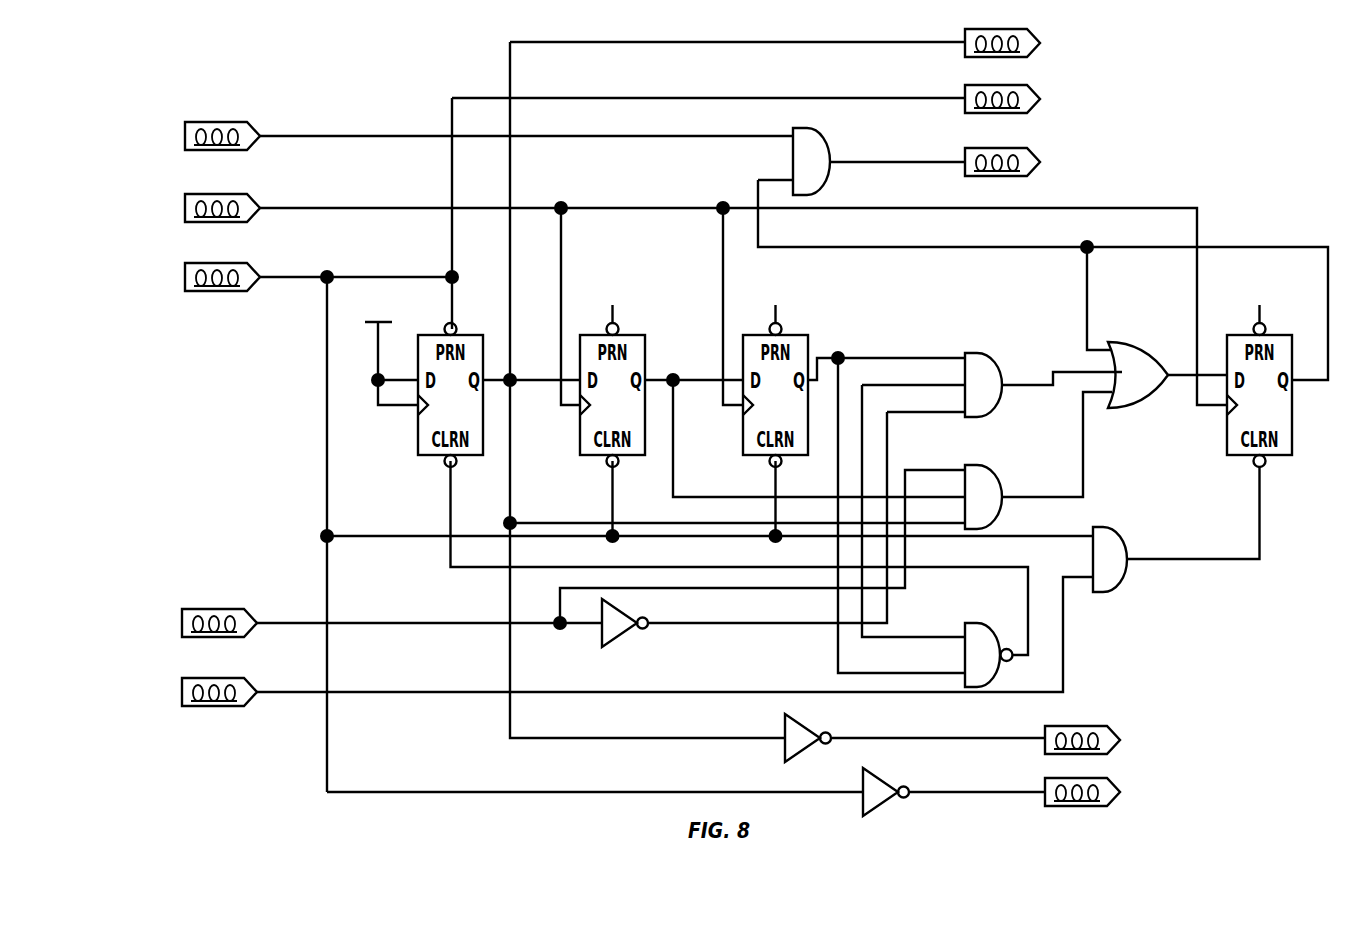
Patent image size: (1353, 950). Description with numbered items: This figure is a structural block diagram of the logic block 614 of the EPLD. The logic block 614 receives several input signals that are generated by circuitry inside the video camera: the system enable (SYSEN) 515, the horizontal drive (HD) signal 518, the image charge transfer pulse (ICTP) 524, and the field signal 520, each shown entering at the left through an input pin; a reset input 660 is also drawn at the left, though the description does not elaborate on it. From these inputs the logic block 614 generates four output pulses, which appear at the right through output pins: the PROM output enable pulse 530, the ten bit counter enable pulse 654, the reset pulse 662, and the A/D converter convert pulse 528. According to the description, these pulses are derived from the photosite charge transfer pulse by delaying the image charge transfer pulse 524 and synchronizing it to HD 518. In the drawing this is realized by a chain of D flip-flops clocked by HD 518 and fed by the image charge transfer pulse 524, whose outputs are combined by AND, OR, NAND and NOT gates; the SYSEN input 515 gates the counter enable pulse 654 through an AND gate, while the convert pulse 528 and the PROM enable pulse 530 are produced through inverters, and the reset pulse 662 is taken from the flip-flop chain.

The system enable (SYSEN) 515 is at (386, 135).
The horizontal drive (HD) signal 518 is at (381, 207).
The image charge transfer pulse (ICTP) 524 is at (396, 277).
The field signal 520 is at (393, 623).
The RESET input 660 is at (393, 692).
The PROM enable signal 530 is at (510, 738).
The reset signal 662 is at (487, 98).
The 10 bit counter enable pulse 654 is at (858, 164).
The convert signal 528 is at (478, 796).
The logic block 614 is at (218, 757).